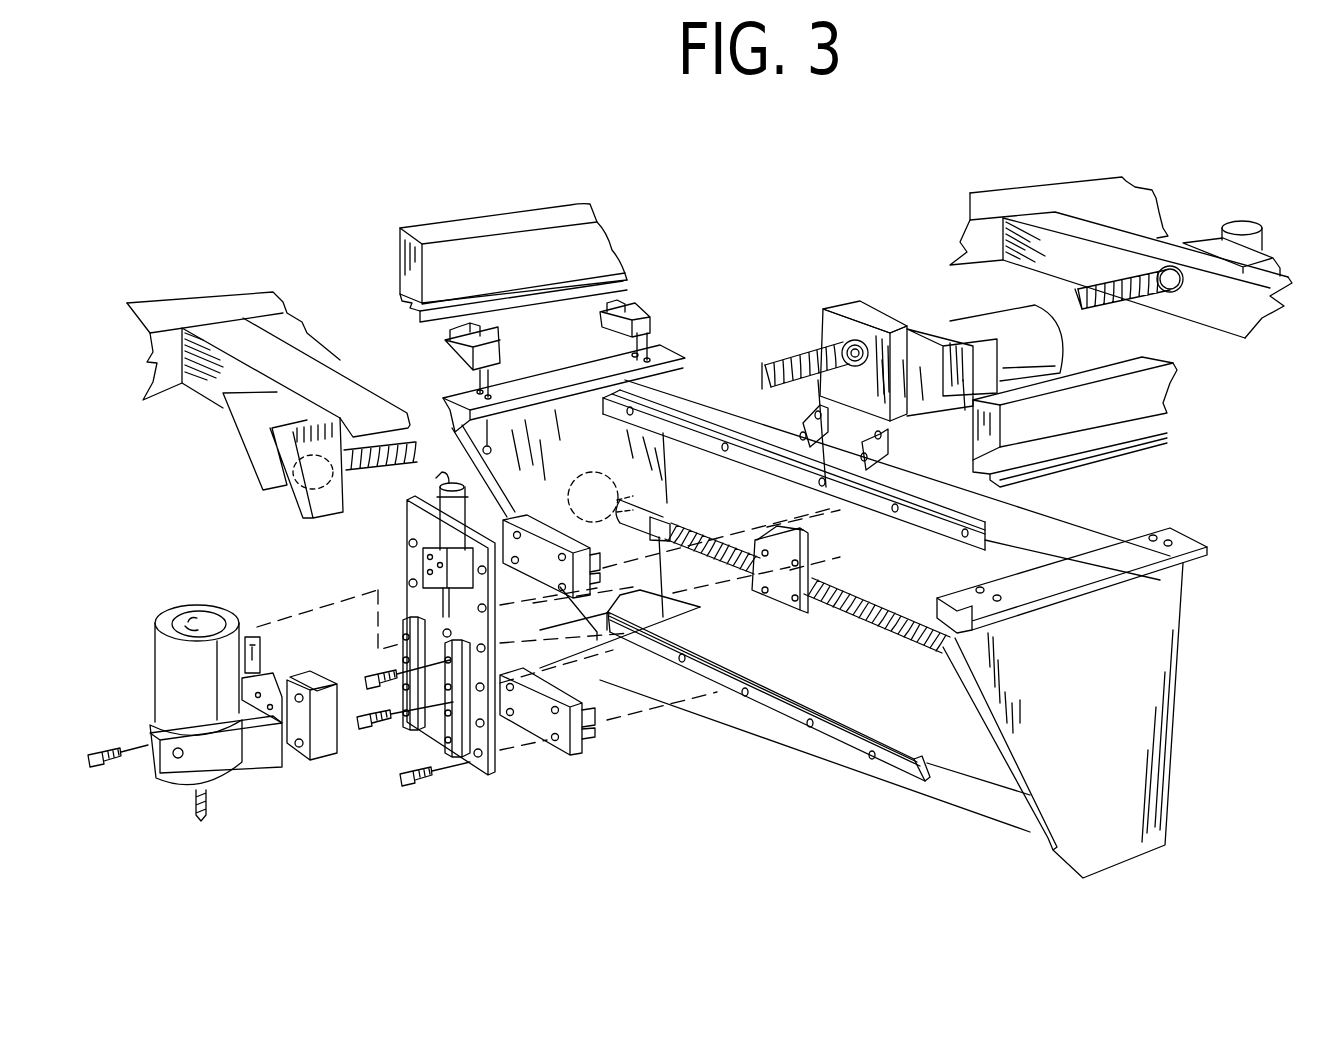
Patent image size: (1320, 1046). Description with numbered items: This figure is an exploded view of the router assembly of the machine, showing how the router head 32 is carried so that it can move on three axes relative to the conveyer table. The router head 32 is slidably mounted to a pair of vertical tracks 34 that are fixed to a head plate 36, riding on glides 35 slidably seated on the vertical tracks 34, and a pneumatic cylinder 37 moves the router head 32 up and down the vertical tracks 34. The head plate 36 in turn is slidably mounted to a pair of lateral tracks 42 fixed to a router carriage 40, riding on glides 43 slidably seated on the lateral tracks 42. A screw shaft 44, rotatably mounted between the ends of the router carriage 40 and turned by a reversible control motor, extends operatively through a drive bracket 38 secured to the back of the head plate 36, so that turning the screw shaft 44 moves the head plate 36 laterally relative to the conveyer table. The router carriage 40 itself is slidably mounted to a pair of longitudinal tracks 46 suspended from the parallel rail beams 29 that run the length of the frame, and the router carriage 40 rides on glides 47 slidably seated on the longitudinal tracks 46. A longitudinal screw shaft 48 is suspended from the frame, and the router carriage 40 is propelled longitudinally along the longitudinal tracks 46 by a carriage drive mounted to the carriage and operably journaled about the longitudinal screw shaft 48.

The rail beams 29 is at (481, 222).
The router head 32 is at (167, 657).
The vertical tracks 34 is at (463, 755).
The glides 35 is at (323, 737).
The head plate 36 is at (424, 603).
The pneumatic cylinder 37 is at (443, 505).
The drive bracket 38 is at (808, 572).
The router carriage 40 is at (1153, 702).
The lateral tracks 42 is at (937, 525).
The glides 43 is at (543, 527).
The screw shaft 44 is at (873, 612).
The longitudinal tracks 46 is at (530, 296).
The glides 47 is at (451, 355).
The longitudinal screw shaft 48 is at (790, 368).